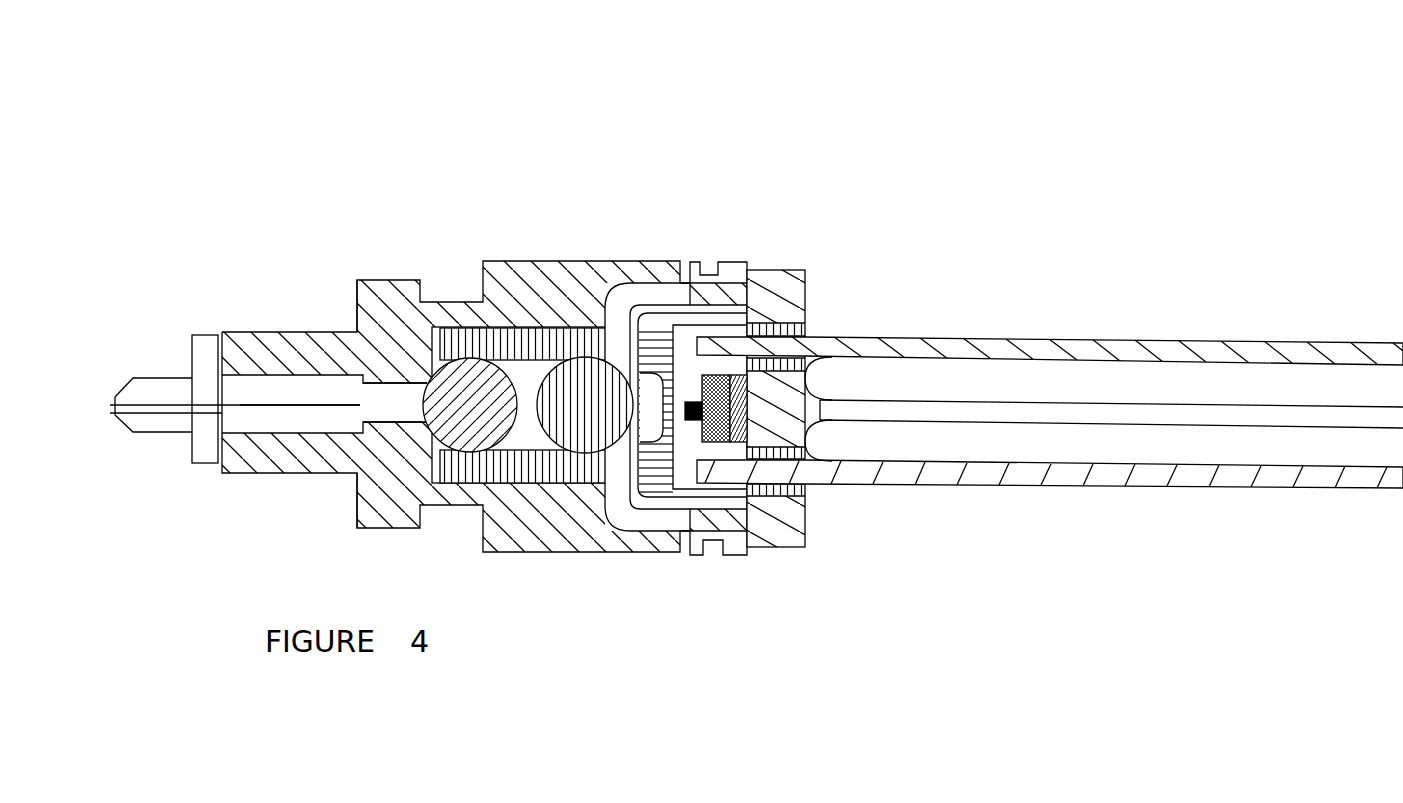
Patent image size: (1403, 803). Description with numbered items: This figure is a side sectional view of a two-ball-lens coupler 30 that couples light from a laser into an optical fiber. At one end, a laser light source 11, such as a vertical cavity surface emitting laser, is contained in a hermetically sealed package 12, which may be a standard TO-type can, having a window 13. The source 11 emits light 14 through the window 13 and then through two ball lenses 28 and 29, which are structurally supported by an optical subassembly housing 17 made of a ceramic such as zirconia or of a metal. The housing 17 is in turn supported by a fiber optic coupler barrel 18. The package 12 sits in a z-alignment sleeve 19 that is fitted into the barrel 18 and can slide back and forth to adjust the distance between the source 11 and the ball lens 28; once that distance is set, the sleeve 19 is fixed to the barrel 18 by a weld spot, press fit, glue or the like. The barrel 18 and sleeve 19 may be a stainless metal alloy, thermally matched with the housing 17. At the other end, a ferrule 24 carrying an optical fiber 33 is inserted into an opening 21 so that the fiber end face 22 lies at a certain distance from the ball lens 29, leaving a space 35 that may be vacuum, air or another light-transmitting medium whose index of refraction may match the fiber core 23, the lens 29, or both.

The laser light source 11 is at (645, 413).
The hermetically sealed package 12 is at (807, 312).
The window 13 is at (648, 492).
The light 14 is at (645, 413).
The optical subassembly housing 17 is at (537, 337).
The fiber optic coupler barrel 18 is at (582, 553).
The z-alignment sleeve 19 is at (738, 258).
The opening 21 is at (235, 385).
The fiber end face 22 is at (410, 428).
The fiber core 23 is at (273, 402).
The ferrule 24 is at (200, 467).
The ball lens 28 is at (622, 448).
The ball lens 29 is at (495, 353).
The coupler 30 is at (933, 263).
The optical fiber 33 is at (120, 397).
The space 35 is at (377, 393).